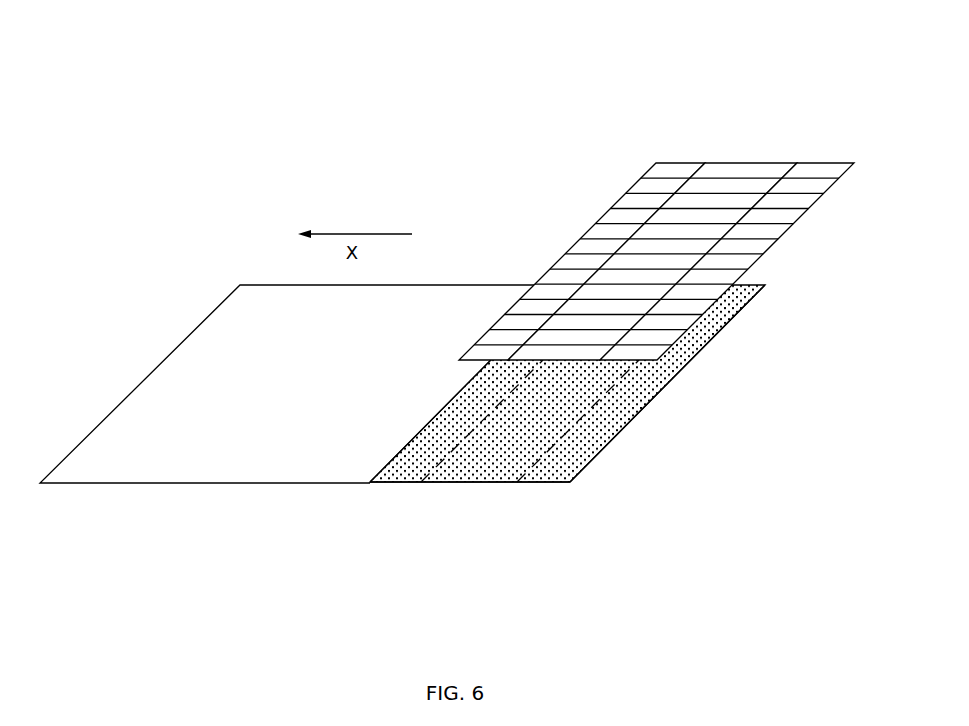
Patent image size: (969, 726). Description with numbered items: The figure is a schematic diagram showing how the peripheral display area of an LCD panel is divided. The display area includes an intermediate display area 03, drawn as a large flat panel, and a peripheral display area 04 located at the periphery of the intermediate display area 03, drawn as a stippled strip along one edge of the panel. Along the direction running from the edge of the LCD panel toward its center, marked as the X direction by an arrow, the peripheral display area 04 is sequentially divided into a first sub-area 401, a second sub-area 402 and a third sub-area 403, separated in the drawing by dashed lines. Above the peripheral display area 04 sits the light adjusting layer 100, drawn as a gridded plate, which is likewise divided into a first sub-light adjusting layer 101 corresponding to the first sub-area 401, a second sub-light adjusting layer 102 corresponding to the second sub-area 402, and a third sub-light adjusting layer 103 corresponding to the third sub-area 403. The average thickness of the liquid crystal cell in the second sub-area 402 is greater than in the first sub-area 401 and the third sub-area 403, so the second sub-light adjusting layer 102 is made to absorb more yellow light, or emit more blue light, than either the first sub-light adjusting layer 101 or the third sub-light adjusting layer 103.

The light adjusting layer 100 is at (656, 185).
The first sub-light adjusting layer 101 is at (662, 182).
The second sub-light adjusting layer 102 is at (742, 182).
The third sub-light adjusting layer 103 is at (637, 88).
The intermediate display area 03 is at (207, 465).
The peripheral display area 04 is at (565, 464).
The first sub-area 401 is at (400, 470).
The second sub-area 402 is at (478, 472).
The third sub-area 403 is at (641, 432).